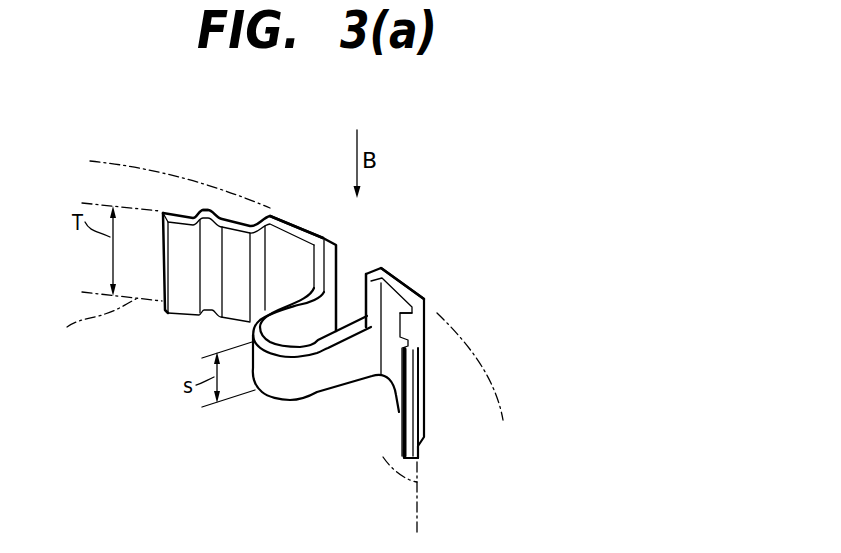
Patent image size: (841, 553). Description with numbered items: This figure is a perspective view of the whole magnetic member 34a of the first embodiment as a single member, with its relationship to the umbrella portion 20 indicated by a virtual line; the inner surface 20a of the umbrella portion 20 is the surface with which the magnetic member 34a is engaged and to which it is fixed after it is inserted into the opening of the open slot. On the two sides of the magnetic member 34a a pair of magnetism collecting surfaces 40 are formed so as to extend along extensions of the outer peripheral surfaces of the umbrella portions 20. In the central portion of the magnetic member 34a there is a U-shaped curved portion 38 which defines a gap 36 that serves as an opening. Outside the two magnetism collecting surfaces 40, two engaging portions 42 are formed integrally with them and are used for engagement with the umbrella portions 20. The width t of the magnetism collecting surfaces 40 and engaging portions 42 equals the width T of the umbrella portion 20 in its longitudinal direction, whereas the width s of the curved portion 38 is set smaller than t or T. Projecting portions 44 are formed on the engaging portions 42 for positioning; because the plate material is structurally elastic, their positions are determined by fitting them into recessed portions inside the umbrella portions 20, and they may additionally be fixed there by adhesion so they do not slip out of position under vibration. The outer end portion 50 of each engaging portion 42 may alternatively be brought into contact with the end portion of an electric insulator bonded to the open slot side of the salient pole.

The umbrella portion 20 is at (122, 166).
The inner surface of the umbrella portion 20a is at (383, 457).
The magnetic member 34a is at (411, 215).
The gap 36 is at (348, 283).
The U-shaped curved portion 38 is at (276, 392).
The magnetism collecting surfaces 40 is at (400, 284).
The engaging portions 42 is at (185, 211).
The projecting portions 44 is at (213, 210).
The outer end portion 50 is at (161, 304).